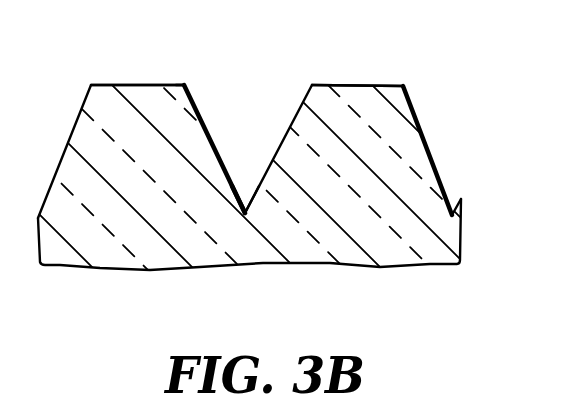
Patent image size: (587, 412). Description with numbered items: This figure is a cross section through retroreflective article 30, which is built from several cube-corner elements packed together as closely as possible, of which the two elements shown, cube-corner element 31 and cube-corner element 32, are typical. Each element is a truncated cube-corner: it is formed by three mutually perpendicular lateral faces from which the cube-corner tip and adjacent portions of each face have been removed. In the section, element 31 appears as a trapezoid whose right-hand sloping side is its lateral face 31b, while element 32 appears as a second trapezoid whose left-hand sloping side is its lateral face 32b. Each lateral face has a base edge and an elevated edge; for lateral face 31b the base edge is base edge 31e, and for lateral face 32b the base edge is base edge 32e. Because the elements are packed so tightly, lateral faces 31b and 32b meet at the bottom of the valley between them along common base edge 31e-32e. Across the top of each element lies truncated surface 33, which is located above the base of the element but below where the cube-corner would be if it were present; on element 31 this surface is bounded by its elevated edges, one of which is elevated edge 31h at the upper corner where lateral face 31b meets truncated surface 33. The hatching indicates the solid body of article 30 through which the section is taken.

The retroreflective article 30 is at (117, 289).
The cube-corner element 31 is at (96, 64).
The cube-corner element 32 is at (408, 72).
The truncated surface 33 is at (142, 83).
The elevated edge 31h is at (186, 83).
The lateral face 31b is at (198, 113).
The lateral face 32b is at (302, 103).
The base edge 31e is at (238, 199).
The base edge 32e is at (245, 206).
The common base edge 31e-32e is at (316, 249).